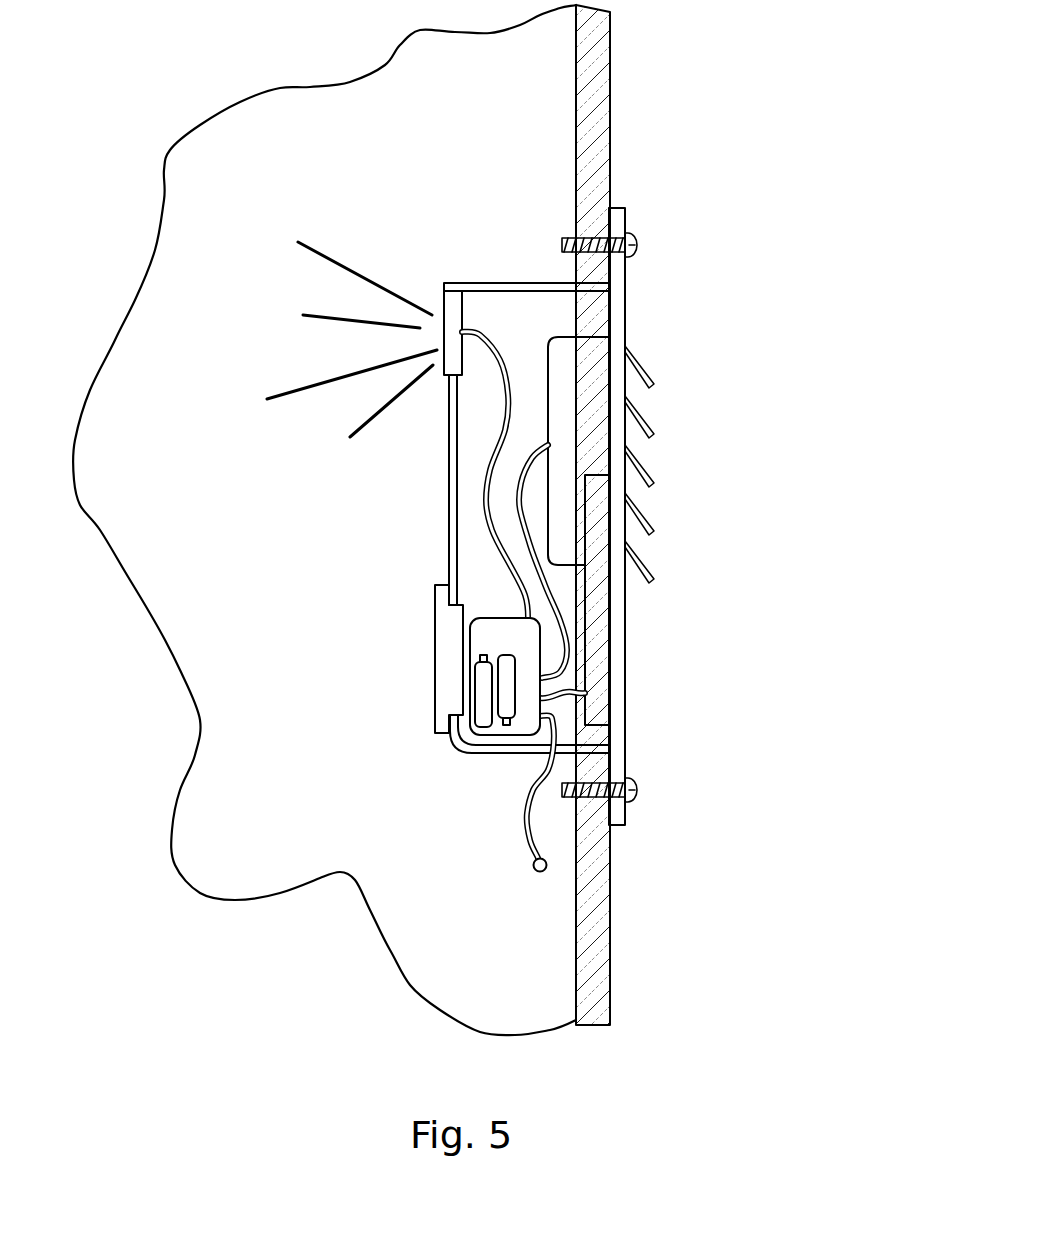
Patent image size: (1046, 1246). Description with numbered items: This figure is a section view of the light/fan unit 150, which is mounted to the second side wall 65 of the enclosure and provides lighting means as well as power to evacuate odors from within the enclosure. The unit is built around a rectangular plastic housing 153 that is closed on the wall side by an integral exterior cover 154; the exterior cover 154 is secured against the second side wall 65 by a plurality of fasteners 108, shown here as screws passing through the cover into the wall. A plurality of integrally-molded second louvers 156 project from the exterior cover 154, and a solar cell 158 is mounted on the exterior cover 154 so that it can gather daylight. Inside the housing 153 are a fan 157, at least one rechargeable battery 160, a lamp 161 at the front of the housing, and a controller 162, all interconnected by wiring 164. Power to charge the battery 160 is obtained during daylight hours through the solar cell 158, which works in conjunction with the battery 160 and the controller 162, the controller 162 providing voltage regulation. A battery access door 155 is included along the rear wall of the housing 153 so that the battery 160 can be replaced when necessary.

The second side wall 65 is at (533, 138).
The light/fan unit 150 is at (727, 123).
The rectangular plastic housing 153 is at (505, 283).
The fasteners 108 is at (637, 246).
The fan 157 is at (580, 365).
The second louvers 156 is at (653, 568).
The lamp 161 is at (447, 355).
The wiring 164 is at (492, 535).
The controller 162 is at (480, 635).
The battery access door 155 is at (435, 673).
The exterior cover 154 is at (617, 623).
The solar cell 158 is at (595, 673).
The rechargeable battery 160 is at (508, 702).